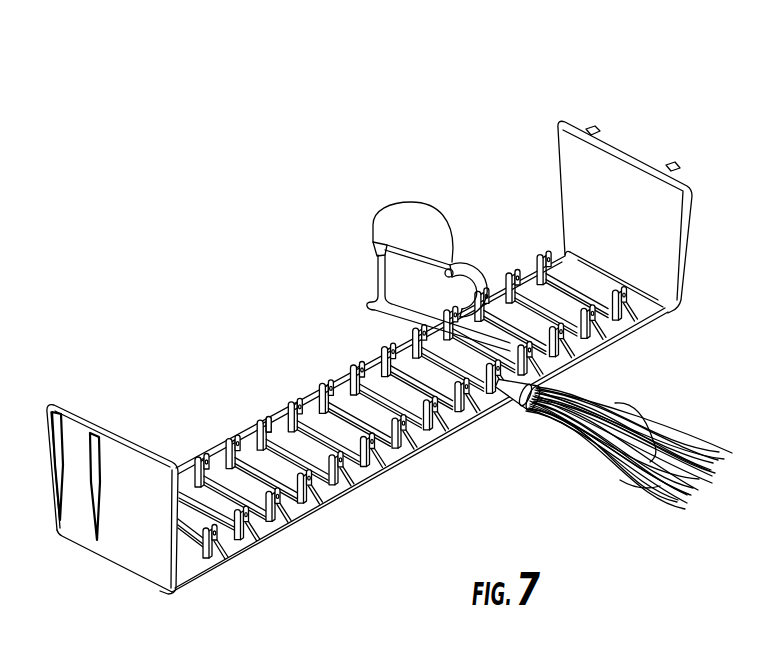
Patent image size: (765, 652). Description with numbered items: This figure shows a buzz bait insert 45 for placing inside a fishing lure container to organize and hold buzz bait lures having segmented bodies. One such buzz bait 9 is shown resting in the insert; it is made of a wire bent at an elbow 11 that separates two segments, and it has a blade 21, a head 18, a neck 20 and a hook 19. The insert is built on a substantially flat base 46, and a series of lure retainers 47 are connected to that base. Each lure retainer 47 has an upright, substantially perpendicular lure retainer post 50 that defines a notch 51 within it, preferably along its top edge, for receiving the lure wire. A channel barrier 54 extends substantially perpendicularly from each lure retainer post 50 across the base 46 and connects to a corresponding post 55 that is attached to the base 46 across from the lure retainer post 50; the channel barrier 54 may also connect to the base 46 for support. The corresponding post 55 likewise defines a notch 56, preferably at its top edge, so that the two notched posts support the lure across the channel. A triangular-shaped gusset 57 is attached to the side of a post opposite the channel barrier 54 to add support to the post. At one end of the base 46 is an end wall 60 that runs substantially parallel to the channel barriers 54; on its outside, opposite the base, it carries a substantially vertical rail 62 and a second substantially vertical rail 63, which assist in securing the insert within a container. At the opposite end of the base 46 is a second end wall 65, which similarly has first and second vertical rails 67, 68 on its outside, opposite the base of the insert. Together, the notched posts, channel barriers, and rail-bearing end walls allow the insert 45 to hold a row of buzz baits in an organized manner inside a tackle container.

The buzz bait insert 45 is at (613, 66).
The base 46 is at (657, 313).
The lure retainer 47 is at (508, 274).
The lure retainer post 50 is at (254, 426).
The notch 51 is at (268, 423).
The channel barrier 54 is at (324, 398).
The corresponding post 55 is at (397, 457).
The notch 56 is at (373, 449).
The gusset 57 is at (262, 547).
The end wall 60 is at (618, 168).
The vertical rail 62 is at (591, 126).
The second vertical rail 63 is at (661, 166).
The second end wall 65 is at (135, 540).
The first vertical rail 67 is at (66, 412).
The second vertical rail 68 is at (97, 437).
The buzz bait 9 is at (364, 235).
The blade 21 is at (418, 203).
The elbow 11 is at (364, 303).
The head 18 is at (526, 386).
The hook 19 is at (638, 418).
The neck 20 is at (503, 400).